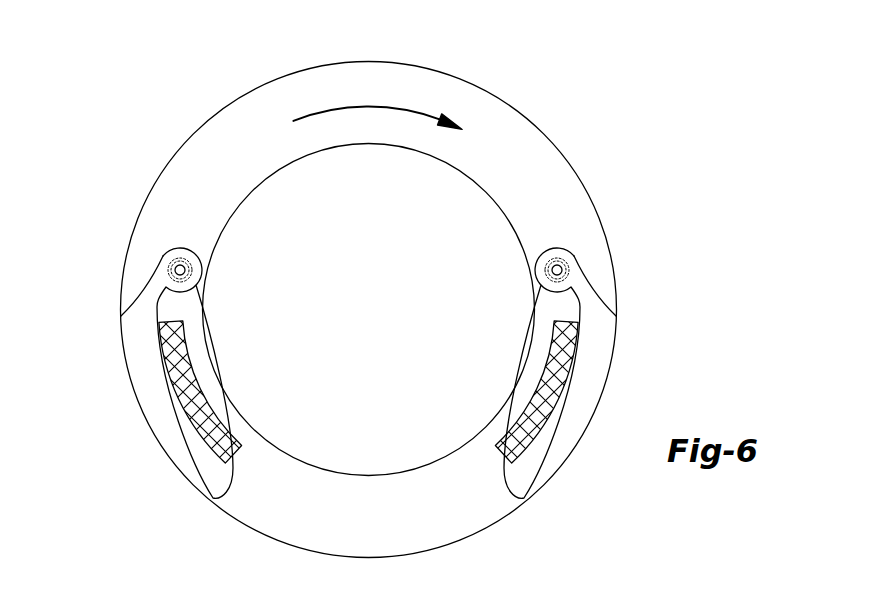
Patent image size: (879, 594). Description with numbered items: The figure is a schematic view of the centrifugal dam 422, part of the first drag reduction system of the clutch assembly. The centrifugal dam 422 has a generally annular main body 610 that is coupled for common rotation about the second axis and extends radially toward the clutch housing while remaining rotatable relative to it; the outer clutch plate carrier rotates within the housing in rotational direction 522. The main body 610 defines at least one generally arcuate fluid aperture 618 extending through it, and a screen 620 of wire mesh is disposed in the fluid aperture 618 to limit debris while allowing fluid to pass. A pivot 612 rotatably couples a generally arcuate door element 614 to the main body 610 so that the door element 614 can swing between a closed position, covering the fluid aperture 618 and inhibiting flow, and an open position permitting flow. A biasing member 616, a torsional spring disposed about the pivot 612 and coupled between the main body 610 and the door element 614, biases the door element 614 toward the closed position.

The centrifugal dam 422 is at (572, 117).
The rotational direction 522 is at (369, 105).
The main body 610 is at (195, 130).
The pivot 612 is at (185, 270).
The door element 614 is at (155, 411).
The biasing member 616 is at (186, 258).
The fluid aperture 618 is at (236, 460).
The screen 620 is at (212, 423).